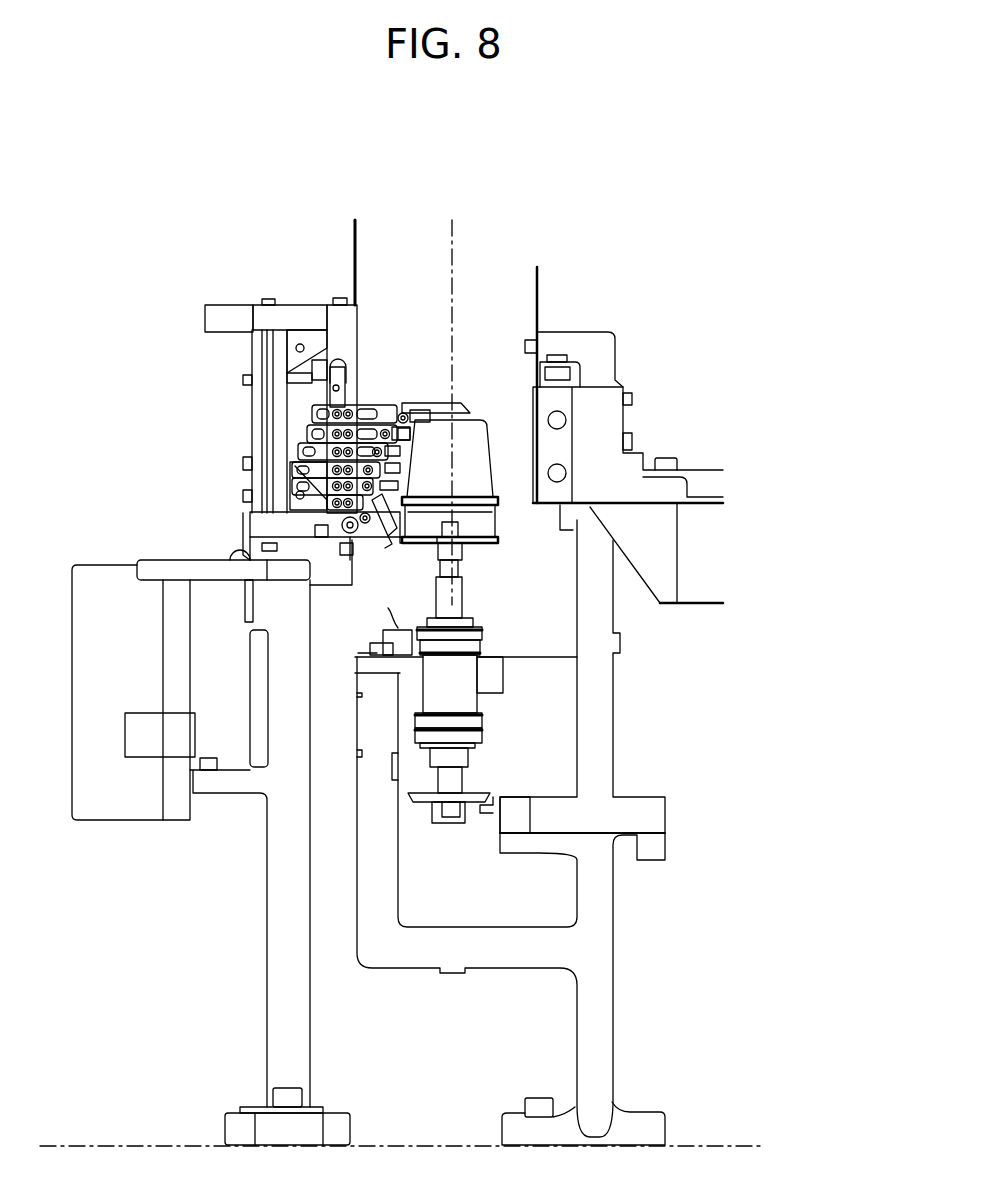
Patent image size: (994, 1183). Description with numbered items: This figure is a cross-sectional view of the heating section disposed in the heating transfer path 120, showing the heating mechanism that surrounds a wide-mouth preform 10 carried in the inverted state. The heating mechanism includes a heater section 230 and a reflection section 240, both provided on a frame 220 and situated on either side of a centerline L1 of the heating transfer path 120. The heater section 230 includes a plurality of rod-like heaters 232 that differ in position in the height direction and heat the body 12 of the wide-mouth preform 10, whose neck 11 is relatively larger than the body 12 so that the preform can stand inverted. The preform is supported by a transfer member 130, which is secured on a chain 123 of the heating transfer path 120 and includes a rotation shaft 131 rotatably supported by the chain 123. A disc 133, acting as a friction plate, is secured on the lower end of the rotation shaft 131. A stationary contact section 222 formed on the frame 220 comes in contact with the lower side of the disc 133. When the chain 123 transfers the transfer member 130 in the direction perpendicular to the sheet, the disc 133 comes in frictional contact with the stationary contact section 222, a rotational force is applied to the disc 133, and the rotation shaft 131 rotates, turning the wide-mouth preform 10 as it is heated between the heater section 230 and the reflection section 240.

The wide-mouth preform 10 is at (492, 458).
The neck 11 is at (483, 520).
The body 12 is at (470, 433).
The heating transfer path 120 is at (697, 340).
The chain 123 is at (480, 652).
The transfer member 130 is at (488, 700).
The rotation shaft 131 is at (460, 597).
The disc 133 is at (473, 797).
The frame 220 is at (603, 948).
The stationary contact section 222 is at (500, 812).
The heater section 230 is at (298, 432).
The rod-like heater 232 is at (405, 408).
The reflection section 240 is at (527, 425).
The centerline L1 is at (455, 236).